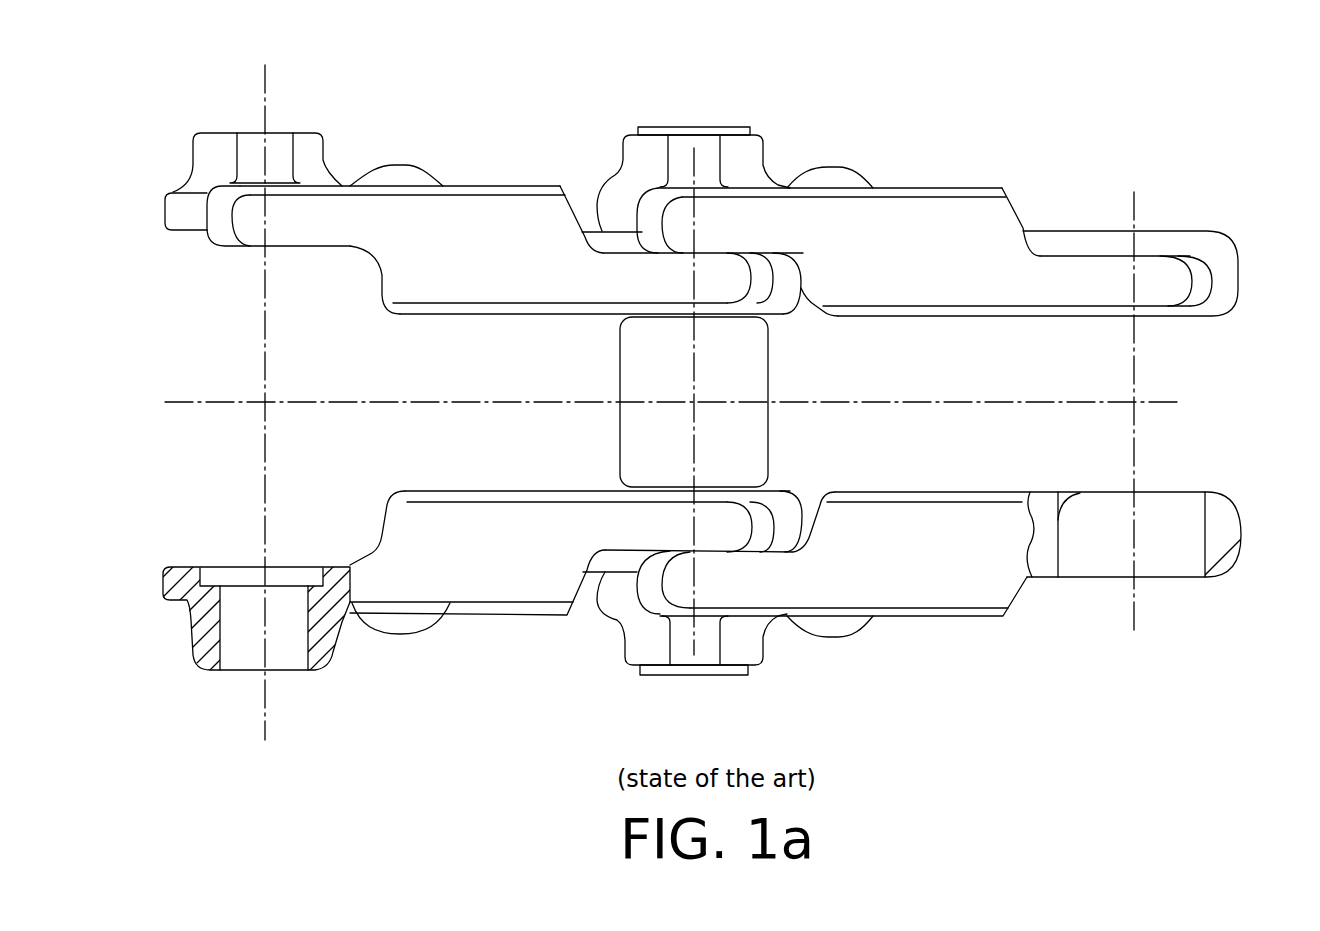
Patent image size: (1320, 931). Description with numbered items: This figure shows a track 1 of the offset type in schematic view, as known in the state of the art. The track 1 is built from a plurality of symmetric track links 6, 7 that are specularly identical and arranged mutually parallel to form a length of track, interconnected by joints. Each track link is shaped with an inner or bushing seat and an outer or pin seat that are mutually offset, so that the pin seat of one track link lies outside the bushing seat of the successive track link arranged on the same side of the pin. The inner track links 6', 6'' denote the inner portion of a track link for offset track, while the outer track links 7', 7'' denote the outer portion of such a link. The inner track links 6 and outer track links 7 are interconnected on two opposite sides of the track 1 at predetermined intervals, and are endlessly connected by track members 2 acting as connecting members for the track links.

The track 1 is at (1060, 172).
The track member 2 is at (1163, 394).
The inner track link 6 is at (602, 189).
The inner track link 6' is at (815, 247).
The inner track link 6'' is at (835, 534).
The outer track link 7 is at (688, 642).
The outer track link 7' is at (481, 135).
The outer track link 7'' is at (433, 647).